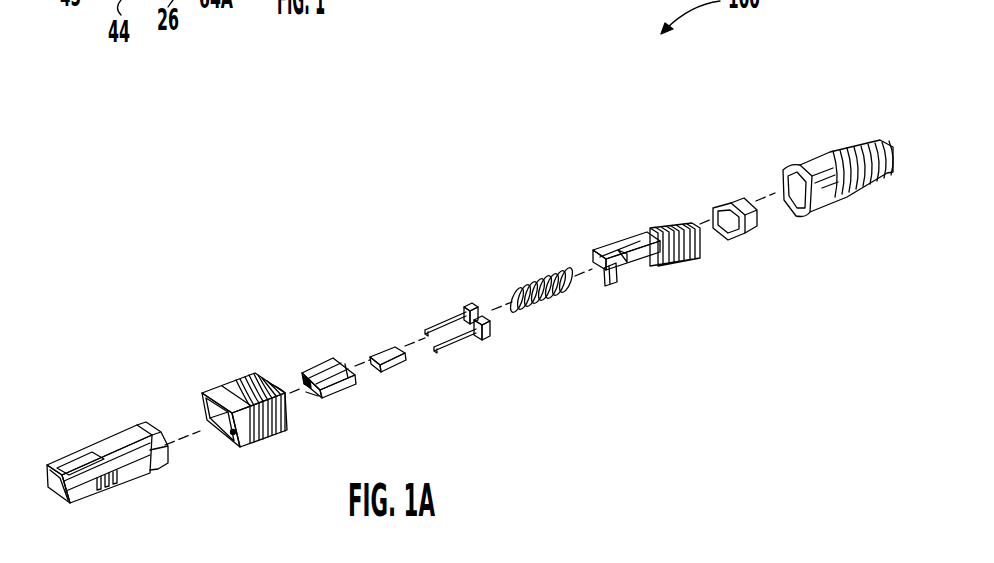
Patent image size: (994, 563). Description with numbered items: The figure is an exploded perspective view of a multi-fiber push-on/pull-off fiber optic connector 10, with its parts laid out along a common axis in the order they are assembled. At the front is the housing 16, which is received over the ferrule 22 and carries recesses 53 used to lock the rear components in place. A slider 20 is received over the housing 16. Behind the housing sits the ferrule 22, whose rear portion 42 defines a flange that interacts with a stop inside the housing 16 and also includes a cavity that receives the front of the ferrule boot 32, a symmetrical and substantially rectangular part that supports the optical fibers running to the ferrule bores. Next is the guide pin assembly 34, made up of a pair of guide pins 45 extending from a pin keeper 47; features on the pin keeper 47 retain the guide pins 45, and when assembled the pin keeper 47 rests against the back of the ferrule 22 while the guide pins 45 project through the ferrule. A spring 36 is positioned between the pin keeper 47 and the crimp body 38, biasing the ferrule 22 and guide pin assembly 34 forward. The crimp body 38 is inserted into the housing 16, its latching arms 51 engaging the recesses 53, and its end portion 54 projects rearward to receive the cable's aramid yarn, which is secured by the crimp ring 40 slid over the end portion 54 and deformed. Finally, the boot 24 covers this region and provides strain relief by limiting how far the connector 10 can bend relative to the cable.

The fiber optic connector 10 is at (458, 150).
The housing 16 is at (80, 443).
The recesses 53 is at (121, 490).
The slider 20 is at (245, 383).
The rear portion of the ferrule 42 is at (325, 370).
The ferrule 22 is at (333, 404).
The ferrule boot 32 is at (393, 348).
The guide pin assembly 34 is at (440, 303).
The guide pins 45 is at (453, 346).
The pin keeper 47 is at (485, 327).
The spring 36 is at (547, 285).
The crimp body 38 is at (624, 238).
The latching arms 51 is at (616, 284).
The end portion of the crimp body 54 is at (668, 225).
The crimp ring 40 is at (735, 195).
The boot 24 is at (808, 160).